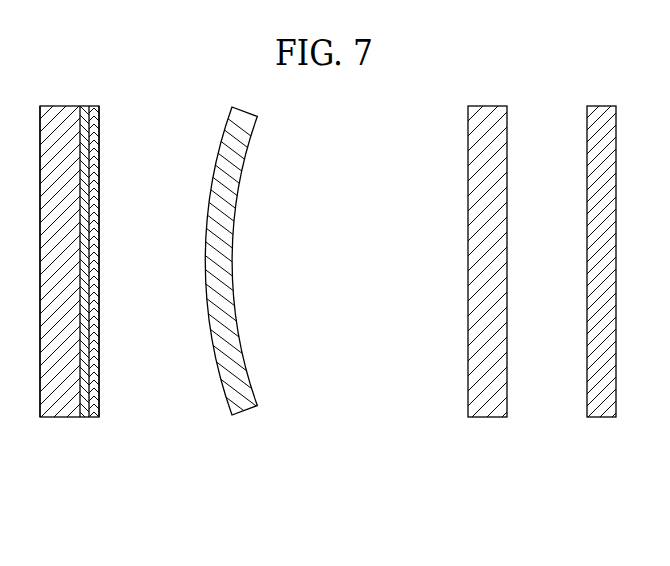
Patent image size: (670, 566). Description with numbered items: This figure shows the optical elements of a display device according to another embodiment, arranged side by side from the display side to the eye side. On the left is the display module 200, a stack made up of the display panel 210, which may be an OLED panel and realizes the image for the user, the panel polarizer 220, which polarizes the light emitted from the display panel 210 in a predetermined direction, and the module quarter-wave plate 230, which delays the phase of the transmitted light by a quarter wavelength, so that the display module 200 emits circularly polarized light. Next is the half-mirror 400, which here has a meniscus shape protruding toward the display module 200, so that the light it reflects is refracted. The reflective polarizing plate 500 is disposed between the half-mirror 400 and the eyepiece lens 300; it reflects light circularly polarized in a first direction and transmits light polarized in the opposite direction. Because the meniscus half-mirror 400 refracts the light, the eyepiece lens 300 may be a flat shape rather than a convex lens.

The display module 200 is at (85, 300).
The display panel 210 is at (43, 417).
The panel polarizer 220 is at (82, 417).
The module quarter-wave plate 230 is at (114, 290).
The half-mirror 400 is at (244, 415).
The reflective polarizing plate 500 is at (486, 417).
The eyepiece lens 300 is at (602, 417).